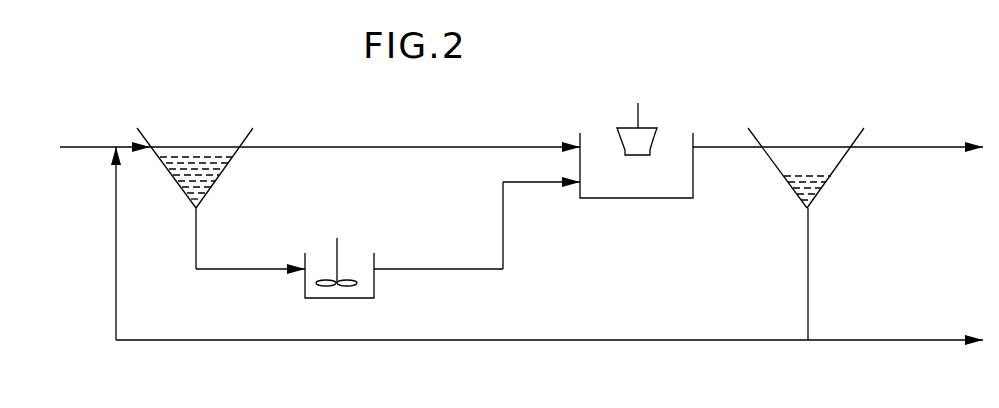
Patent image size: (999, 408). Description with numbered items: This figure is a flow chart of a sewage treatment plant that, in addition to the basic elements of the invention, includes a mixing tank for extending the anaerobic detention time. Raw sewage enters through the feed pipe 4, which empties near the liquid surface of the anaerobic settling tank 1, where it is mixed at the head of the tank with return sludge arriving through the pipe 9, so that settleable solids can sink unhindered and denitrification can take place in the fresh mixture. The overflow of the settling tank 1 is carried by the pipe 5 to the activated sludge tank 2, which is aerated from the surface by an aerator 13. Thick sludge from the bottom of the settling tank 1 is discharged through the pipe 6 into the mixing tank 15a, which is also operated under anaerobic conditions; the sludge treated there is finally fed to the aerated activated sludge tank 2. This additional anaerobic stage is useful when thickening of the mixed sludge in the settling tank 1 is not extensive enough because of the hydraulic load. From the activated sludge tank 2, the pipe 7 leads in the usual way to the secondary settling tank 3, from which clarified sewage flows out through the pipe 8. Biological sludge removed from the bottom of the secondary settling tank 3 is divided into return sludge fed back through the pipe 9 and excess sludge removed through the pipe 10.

The settling tank 1 is at (206, 153).
The activated sludge tank 2 is at (667, 158).
The secondary settling tank 3 is at (806, 157).
The pipe 4 is at (105, 137).
The pipe 5 is at (416, 136).
The pipe 6 is at (250, 241).
The pipe 7 is at (720, 135).
The pipe 8 is at (923, 136).
The pipe 9 is at (459, 243).
The pipe 10 is at (895, 276).
The aerator 13 is at (628, 137).
The mixing tank 15a is at (347, 280).